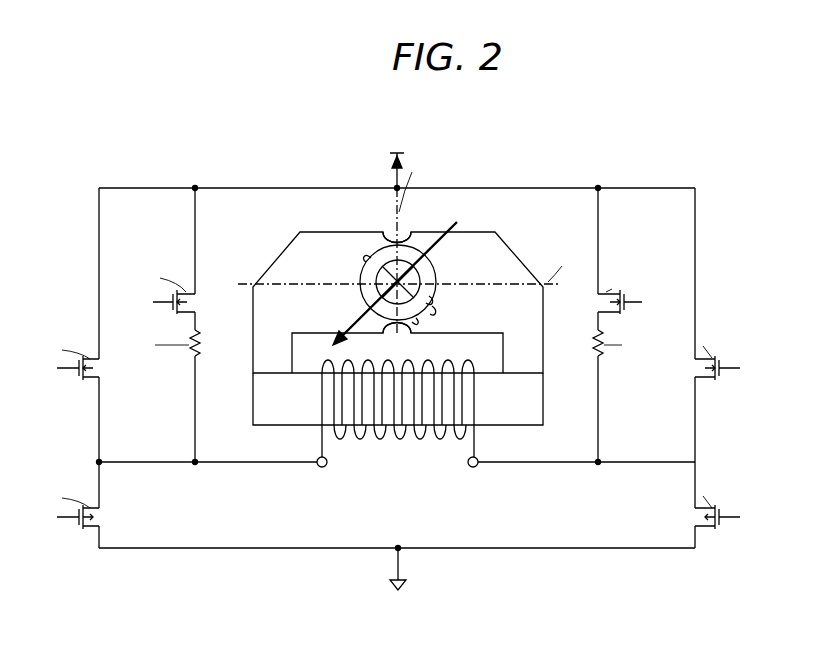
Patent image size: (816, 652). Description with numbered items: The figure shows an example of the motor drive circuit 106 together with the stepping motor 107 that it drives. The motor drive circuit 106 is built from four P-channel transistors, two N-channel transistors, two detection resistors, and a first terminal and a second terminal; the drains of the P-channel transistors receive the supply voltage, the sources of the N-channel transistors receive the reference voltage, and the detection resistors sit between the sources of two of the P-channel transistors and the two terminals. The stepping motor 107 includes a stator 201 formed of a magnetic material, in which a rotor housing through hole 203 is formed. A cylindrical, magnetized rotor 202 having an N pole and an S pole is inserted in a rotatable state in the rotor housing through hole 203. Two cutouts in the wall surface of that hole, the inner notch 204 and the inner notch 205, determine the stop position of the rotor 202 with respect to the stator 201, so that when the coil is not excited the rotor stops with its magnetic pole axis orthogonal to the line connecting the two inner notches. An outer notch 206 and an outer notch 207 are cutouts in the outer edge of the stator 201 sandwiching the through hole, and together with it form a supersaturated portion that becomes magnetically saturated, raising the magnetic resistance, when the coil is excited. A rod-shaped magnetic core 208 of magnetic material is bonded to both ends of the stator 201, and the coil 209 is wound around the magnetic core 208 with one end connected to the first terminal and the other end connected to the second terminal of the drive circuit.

The motor drive circuit 106 is at (642, 165).
The stepping motor 107 is at (252, 243).
The stator 201 is at (544, 326).
The rotor 202 is at (440, 262).
The rotor housing through hole 203 is at (436, 290).
The inner notch 204 is at (420, 316).
The inner notch 205 is at (378, 251).
The outer notch 206 is at (406, 238).
The outer notch 207 is at (400, 324).
The magnetic core 208 is at (544, 400).
The coil 209 is at (356, 441).